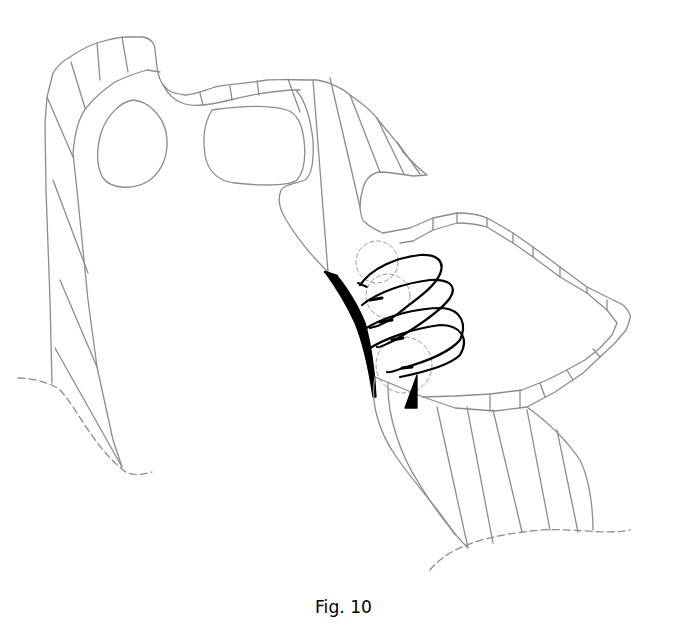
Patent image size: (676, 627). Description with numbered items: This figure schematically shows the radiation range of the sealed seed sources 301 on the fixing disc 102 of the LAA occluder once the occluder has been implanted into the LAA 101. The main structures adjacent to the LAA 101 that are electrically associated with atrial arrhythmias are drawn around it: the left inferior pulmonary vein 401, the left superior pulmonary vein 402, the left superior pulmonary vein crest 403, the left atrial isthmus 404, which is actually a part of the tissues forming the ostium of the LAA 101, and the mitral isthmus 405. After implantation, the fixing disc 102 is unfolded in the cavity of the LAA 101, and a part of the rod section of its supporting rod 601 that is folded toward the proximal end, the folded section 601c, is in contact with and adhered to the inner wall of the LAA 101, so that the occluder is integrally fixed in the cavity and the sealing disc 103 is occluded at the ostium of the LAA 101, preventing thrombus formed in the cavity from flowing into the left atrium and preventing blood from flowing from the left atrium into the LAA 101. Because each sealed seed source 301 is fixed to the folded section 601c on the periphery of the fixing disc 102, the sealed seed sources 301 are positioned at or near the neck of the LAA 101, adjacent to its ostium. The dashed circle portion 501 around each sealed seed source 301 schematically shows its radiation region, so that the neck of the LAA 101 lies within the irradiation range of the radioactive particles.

The left inferior pulmonary vein 401 is at (128, 142).
The left superior pulmonary vein 402 is at (270, 143).
The left superior pulmonary vein crest 403 is at (328, 270).
The left atrial isthmus 404 is at (343, 283).
The dashed circle portion 501 is at (358, 302).
The sealing disc 103 is at (362, 348).
The mitral isthmus 405 is at (380, 420).
The sealed seed source 301 is at (370, 272).
The supporting rod 601 is at (503, 276).
The fixing disc 102 is at (407, 313).
The LAA 101 is at (482, 296).
The folded section 601c is at (417, 373).